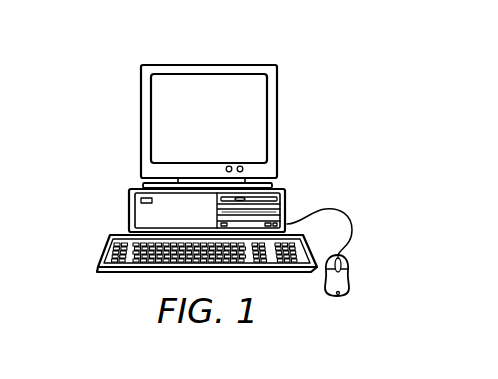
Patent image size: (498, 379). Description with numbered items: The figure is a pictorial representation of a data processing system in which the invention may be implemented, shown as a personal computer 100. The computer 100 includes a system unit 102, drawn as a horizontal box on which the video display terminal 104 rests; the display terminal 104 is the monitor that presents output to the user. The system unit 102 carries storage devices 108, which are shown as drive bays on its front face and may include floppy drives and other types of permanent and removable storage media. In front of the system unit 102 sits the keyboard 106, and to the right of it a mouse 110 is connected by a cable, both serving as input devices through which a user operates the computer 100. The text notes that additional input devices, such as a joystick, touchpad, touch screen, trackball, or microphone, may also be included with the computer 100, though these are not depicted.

The computer 100 is at (91, 80).
The system unit 102 is at (129, 210).
The video display terminal 104 is at (278, 102).
The keyboard 106 is at (102, 252).
The storage devices 108 is at (285, 198).
The mouse 110 is at (348, 285).